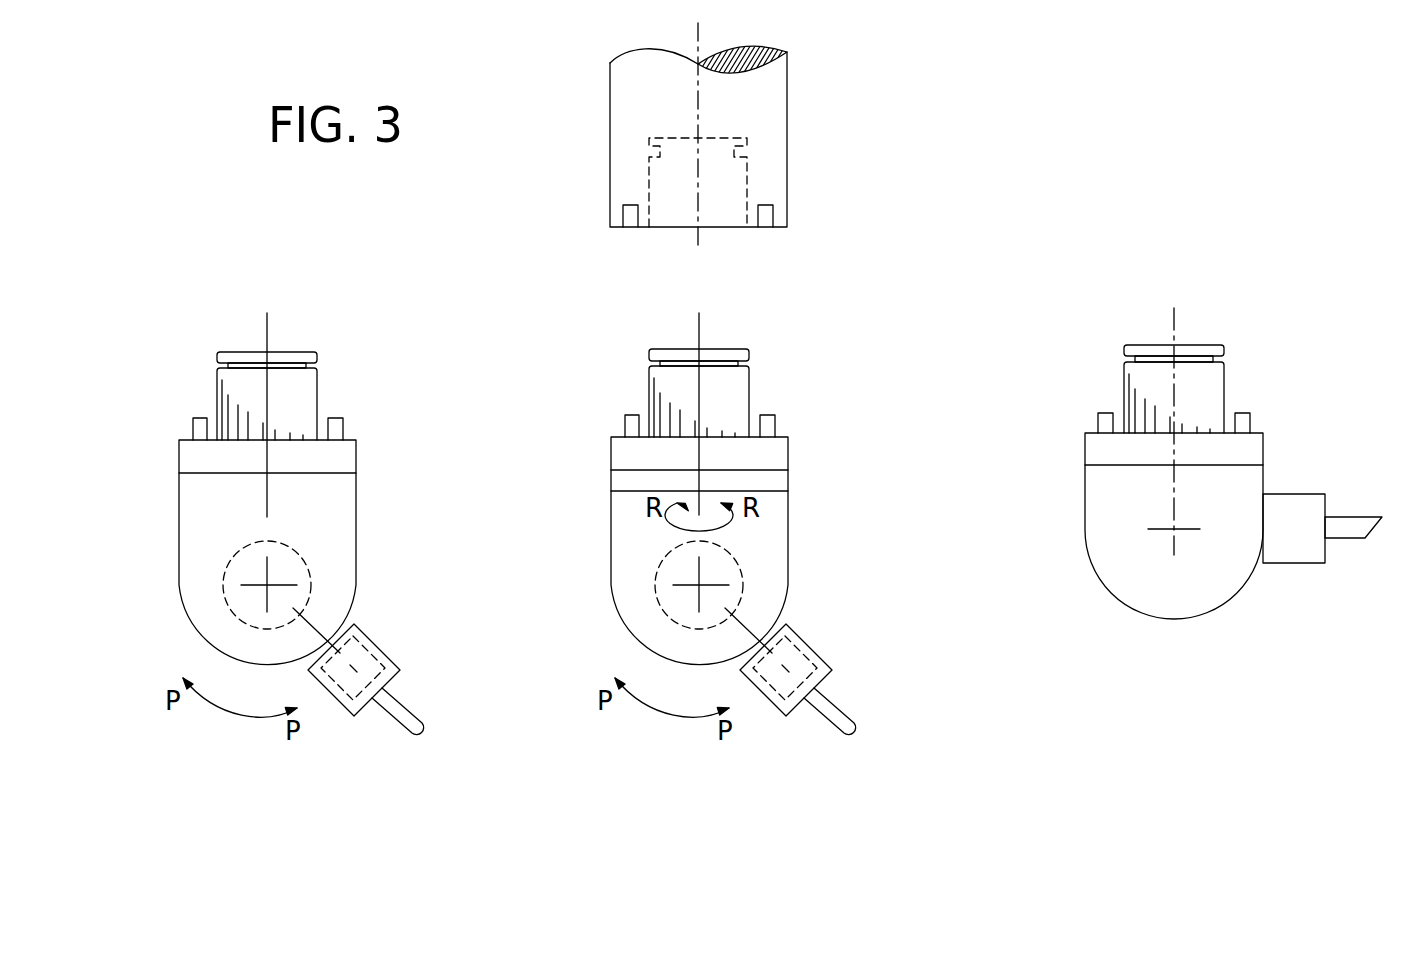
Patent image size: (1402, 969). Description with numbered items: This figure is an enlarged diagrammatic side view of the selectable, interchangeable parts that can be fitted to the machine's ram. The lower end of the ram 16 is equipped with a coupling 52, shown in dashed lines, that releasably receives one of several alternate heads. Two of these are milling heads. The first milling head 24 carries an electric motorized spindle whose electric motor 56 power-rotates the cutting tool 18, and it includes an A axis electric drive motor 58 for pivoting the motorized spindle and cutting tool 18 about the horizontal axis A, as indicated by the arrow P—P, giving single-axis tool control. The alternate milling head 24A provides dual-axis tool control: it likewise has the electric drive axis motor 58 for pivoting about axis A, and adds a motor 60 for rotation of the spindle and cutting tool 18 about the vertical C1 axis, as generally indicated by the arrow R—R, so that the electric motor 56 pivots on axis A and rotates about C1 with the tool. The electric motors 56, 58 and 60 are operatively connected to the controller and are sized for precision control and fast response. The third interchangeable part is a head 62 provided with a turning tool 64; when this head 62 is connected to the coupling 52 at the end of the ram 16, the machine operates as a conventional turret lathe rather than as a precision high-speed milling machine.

The ram 16 is at (787, 108).
The coupling 52 is at (747, 182).
The milling head 24 is at (315, 508).
The milling head 24A is at (756, 507).
The A axis electric drive motor 58 is at (554, 547).
The electric motor 56 is at (589, 647).
The cutting tool 18 is at (651, 679).
The motor 60 is at (746, 452).
The head 62 is at (1280, 464).
The turning tool 64 is at (1353, 517).
The vertical C1 axis C1 is at (571, 462).
The horizontal axis A is at (407, 554).